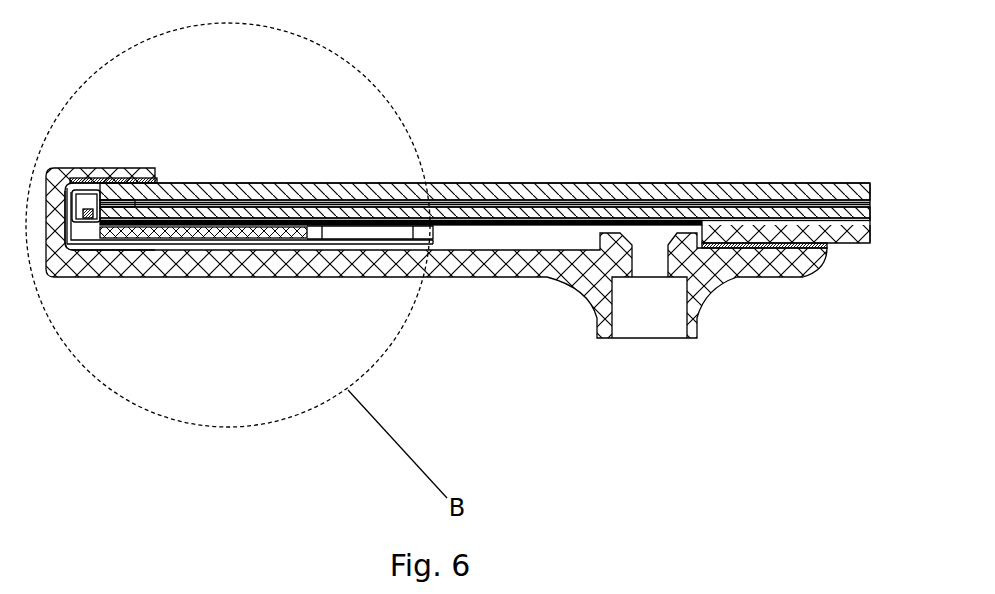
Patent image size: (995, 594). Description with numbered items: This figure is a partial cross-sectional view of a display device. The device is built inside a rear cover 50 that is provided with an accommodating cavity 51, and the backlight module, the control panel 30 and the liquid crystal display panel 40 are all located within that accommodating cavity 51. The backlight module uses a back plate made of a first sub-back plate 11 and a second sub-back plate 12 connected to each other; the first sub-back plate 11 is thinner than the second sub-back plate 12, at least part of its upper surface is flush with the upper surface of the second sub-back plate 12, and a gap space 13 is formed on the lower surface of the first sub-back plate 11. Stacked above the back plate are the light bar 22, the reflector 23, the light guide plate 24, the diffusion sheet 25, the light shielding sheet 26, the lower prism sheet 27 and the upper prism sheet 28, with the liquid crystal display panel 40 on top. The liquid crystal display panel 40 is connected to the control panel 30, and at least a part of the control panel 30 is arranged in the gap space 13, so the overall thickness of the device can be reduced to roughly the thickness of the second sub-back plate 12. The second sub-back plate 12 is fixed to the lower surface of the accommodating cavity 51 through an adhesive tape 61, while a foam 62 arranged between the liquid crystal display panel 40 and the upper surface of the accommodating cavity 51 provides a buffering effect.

The first sub-back plate 11 is at (145, 228).
The second sub-back plate 12 is at (826, 238).
The gap space 13 is at (650, 227).
The light bar 22 is at (90, 215).
The reflector 23 is at (280, 221).
The light guide plate 24 is at (357, 215).
The diffusion sheet 25 is at (183, 209).
The light shielding sheet 26 is at (132, 209).
The lower prism sheet 27 is at (230, 208).
The upper prism sheet 28 is at (272, 208).
The control panel 30 is at (210, 222).
The liquid crystal display panel 40 is at (318, 197).
The rear cover 50 is at (540, 267).
The accommodating cavity 51 is at (82, 246).
The adhesive tape 61 is at (753, 250).
The foam 62 is at (115, 177).